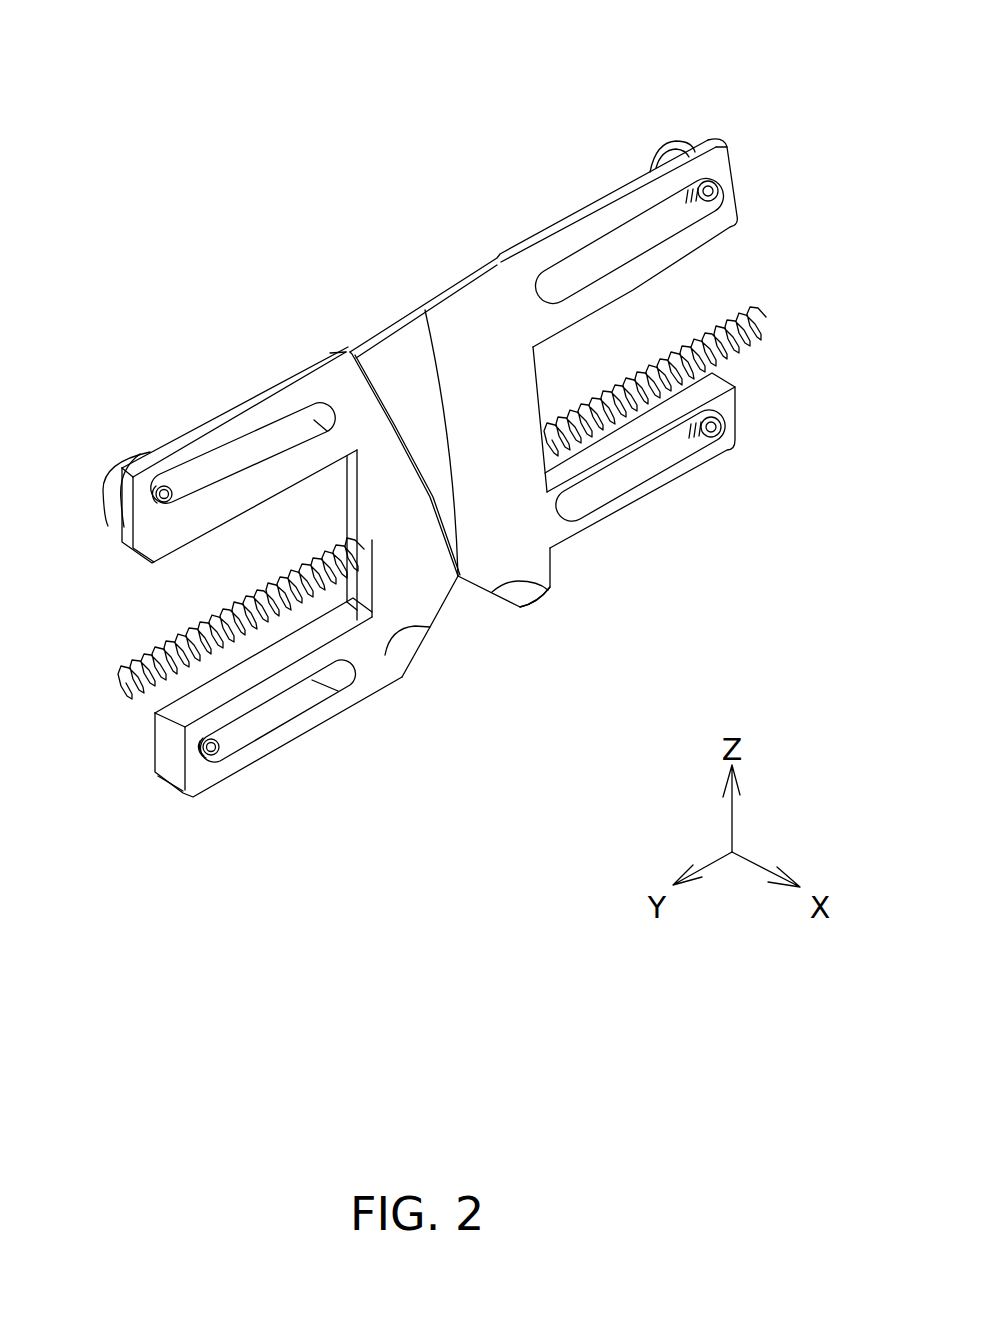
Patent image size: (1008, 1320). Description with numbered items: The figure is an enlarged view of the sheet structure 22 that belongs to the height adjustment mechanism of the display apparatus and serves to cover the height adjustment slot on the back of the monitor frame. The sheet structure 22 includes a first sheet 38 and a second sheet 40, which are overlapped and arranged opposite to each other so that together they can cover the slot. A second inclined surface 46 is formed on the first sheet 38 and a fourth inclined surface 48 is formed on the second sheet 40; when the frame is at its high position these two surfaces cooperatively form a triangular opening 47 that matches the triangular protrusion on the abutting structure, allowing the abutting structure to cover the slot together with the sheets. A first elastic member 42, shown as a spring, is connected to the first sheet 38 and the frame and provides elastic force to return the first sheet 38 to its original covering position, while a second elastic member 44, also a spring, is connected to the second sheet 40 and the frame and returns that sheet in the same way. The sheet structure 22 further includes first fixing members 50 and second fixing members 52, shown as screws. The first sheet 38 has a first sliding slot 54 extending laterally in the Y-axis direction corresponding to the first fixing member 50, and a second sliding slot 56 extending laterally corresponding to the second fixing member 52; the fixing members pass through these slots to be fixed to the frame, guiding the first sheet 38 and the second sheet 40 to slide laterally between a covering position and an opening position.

The sheet structure 22 is at (345, 162).
The first sheet 38 is at (495, 348).
The second sheet 40 is at (347, 402).
The first elastic member 42 is at (768, 328).
The second elastic member 44 is at (112, 683).
The second inclined surface 46 is at (552, 587).
The triangular opening 47 is at (473, 613).
The fourth inclined surface 48 is at (386, 655).
The first fixing member 50 is at (658, 147).
The second fixing member 52 is at (110, 498).
The first sliding slot 54 is at (646, 244).
The second sliding slot 56 is at (233, 478).